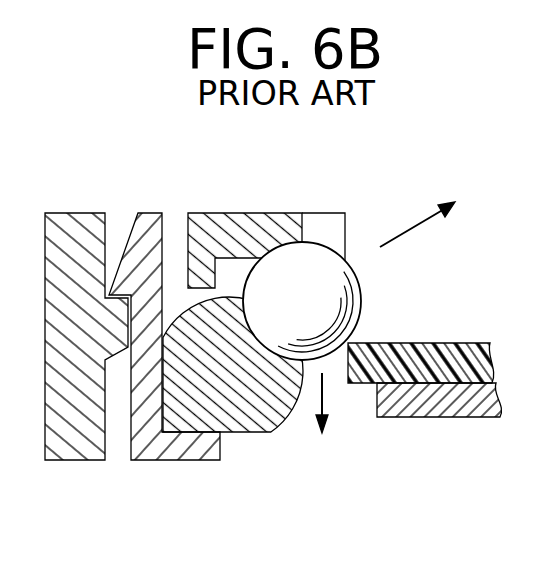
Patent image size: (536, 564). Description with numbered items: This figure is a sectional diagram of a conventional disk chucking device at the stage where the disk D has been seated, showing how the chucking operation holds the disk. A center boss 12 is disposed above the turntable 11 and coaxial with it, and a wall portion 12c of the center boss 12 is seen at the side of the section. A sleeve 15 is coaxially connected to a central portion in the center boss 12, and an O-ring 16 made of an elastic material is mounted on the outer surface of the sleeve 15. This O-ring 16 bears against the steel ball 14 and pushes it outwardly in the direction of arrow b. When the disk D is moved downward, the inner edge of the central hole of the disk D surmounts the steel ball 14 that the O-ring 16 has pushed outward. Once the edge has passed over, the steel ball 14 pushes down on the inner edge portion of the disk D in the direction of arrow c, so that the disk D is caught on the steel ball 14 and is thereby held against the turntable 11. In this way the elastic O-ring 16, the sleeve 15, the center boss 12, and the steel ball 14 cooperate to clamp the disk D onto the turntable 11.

The center boss 12 is at (265, 223).
The holder side wall 12c is at (75, 445).
The sleeve 15 is at (180, 447).
The O-ring 16 is at (272, 437).
The steel ball 14 is at (363, 298).
The disk D is at (470, 342).
The turntable 11 is at (447, 413).
The arrow b is at (417, 209).
The arrow C c is at (329, 403).